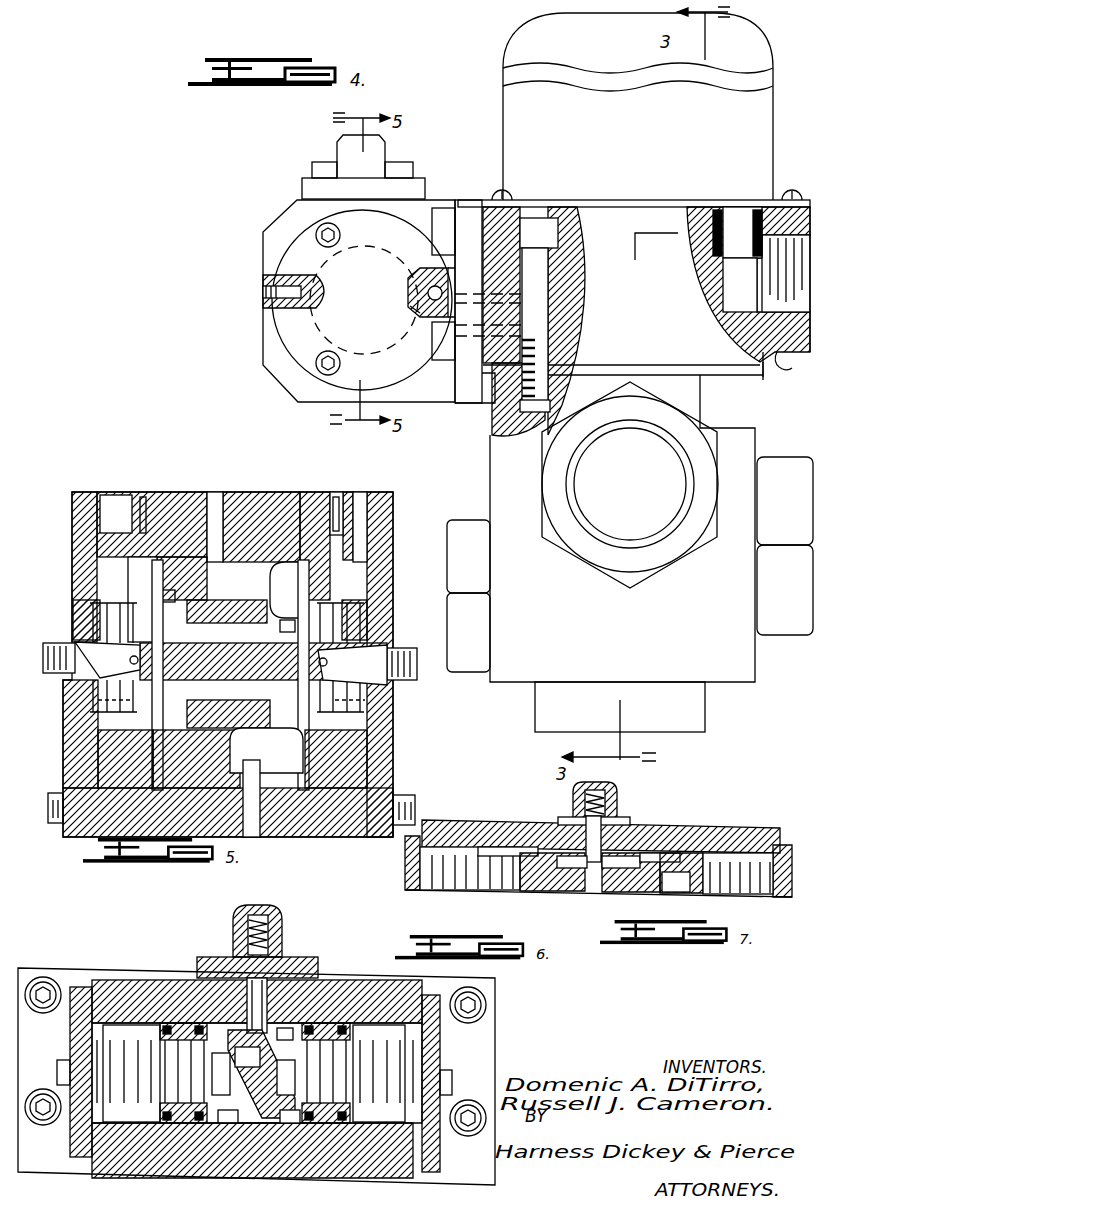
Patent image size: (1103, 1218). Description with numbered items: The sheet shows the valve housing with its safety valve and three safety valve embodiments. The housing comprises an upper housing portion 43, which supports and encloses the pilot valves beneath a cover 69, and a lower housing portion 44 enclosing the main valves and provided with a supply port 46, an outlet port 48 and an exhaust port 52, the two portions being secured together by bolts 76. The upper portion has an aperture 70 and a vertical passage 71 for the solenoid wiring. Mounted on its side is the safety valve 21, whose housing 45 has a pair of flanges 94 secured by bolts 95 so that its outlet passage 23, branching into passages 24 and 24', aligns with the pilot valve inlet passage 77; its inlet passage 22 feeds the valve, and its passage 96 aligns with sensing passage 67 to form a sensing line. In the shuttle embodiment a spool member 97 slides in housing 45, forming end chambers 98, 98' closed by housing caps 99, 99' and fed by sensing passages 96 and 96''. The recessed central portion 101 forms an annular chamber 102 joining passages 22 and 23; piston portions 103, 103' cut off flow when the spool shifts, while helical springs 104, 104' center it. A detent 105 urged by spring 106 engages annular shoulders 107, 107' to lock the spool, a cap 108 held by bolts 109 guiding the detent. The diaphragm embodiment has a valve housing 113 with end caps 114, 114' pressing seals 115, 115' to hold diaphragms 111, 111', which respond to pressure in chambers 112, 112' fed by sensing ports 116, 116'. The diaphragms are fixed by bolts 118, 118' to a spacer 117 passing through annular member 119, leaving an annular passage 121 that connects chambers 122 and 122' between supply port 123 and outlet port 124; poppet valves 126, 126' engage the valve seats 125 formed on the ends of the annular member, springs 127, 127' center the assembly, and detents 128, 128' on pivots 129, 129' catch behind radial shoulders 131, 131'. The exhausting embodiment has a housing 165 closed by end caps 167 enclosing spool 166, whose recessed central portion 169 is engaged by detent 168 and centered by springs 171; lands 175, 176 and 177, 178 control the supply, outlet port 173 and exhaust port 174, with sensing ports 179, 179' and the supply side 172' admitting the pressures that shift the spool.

In FIG. 4, the safety valve 21 is at (255, 349).
In FIG. 6, the safety valve 21 is at (166, 958).
In FIG. 4, the inlet passage 22 is at (266, 292).
In FIG. 6, the inlet passage 22 is at (253, 1074).
In FIG. 4, the outlet passage 23 is at (415, 295).
In FIG. 6, the outlet passage 23 is at (252, 1057).
In FIG. 4, the passage 24 is at (426, 277).
In FIG. 4, the passage 24' is at (391, 318).
In FIG. 4, the upper housing portion 43 is at (662, 295).
In FIG. 4, the lower housing portion 44 is at (668, 640).
In FIG. 4, the safety valve housing 45 is at (300, 206).
In FIG. 6, the safety valve housing 45 is at (158, 975).
In FIG. 4, the supply port 46 is at (470, 520).
In FIG. 4, the outlet port 48 is at (775, 638).
In FIG. 4, the exhaust port 52 is at (665, 548).
In FIG. 4, the sensing passage 67 is at (486, 376).
In FIG. 4, the cover 69 is at (763, 105).
In FIG. 4, the aperture 70 is at (783, 369).
In FIG. 4, the vertical passage 71 is at (758, 206).
In FIG. 4, the bolts 76 is at (545, 323).
In FIG. 4, the inlet passage 77 is at (590, 268).
In FIG. 4, the passage 96 is at (464, 335).
In FIG. 6, the passage 96 is at (351, 1127).
In FIG. 4, the cap 108 is at (386, 152).
In FIG. 6, the cap 108 is at (280, 912).
In FIG. 4, the bolts 109 is at (312, 167).
In FIG. 5, the diaphragm 111 is at (166, 599).
In FIG. 5, the diaphragm 111' is at (273, 579).
In FIG. 5, the chamber 112 is at (168, 498).
In FIG. 5, the chamber 112' is at (317, 498).
In FIG. 5, the valve housing 113 is at (252, 496).
In FIG. 5, the end cap 114 is at (60, 640).
In FIG. 5, the end cap 114' is at (402, 664).
In FIG. 5, the seal 115 is at (114, 568).
In FIG. 5, the seal 115' is at (379, 513).
In FIG. 5, the sensing port 116 is at (134, 491).
In FIG. 5, the sensing port 116' is at (354, 488).
In FIG. 5, the spacer 117 is at (220, 650).
In FIG. 5, the bolt 118 is at (252, 675).
In FIG. 5, the bolt 118' is at (213, 675).
In FIG. 5, the annular member 119 is at (227, 610).
In FIG. 5, the annular passage 121 is at (228, 714).
In FIG. 5, the chamber 122 is at (228, 783).
In FIG. 5, the chamber 122' is at (266, 750).
In FIG. 5, the supply port 123 is at (243, 812).
In FIG. 5, the outlet port 124 is at (215, 492).
In FIG. 5, the valve seat 125 is at (227, 603).
In FIG. 5, the poppet valve 126 is at (159, 758).
In FIG. 5, the poppet valve 126' is at (371, 679).
In FIG. 5, the helical spring 127 is at (79, 653).
In FIG. 5, the helical spring 127' is at (377, 651).
In FIG. 5, the detent 128 is at (79, 646).
In FIG. 5, the detent 128' is at (380, 673).
In FIG. 5, the pivot 129 is at (74, 700).
In FIG. 5, the pivot 129' is at (386, 655).
In FIG. 5, the radial shoulder 131 is at (46, 720).
In FIG. 5, the radial shoulder 131' is at (412, 708).
In FIG. 6, the flanges 94 is at (85, 968).
In FIG. 6, the bolts 95 is at (40, 978).
In FIG. 6, the spool member 97 is at (283, 1025).
In FIG. 6, the chamber 98 is at (393, 1064).
In FIG. 6, the chamber 98' is at (150, 1023).
In FIG. 6, the housing cap 99 is at (455, 1070).
In FIG. 6, the housing cap 99' is at (49, 1061).
In FIG. 6, the central portion 101 is at (265, 1125).
In FIG. 6, the annular chamber 102 is at (237, 1125).
In FIG. 6, the piston portion 103 is at (335, 995).
In FIG. 6, the piston portion 103' is at (193, 987).
In FIG. 6, the helical spring 104 is at (379, 1057).
In FIG. 6, the helical spring 104' is at (140, 1057).
In FIG. 6, the detent 105 is at (272, 985).
In FIG. 6, the helical spring 106 is at (285, 950).
In FIG. 6, the annular shoulder 107 is at (307, 1133).
In FIG. 6, the annular shoulder 107' is at (205, 1138).
In FIG. 6, the passage 96'' is at (162, 1130).
In FIG. 7, the housing 165 is at (472, 820).
In FIG. 7, the spool 166 is at (635, 850).
In FIG. 7, the end caps 167 is at (788, 845).
In FIG. 7, the detent 168 is at (615, 835).
In FIG. 7, the recessed central portion 169 is at (590, 870).
In FIG. 7, the springs 171 is at (448, 820).
In FIG. 7, the block 172' is at (545, 885).
In FIG. 7, the outlet port 173 is at (608, 893).
In FIG. 7, the exhaust port 174 is at (645, 893).
In FIG. 7, the land 175 is at (693, 850).
In FIG. 7, the land 176 is at (740, 825).
In FIG. 7, the land 177 is at (560, 830).
In FIG. 7, the land 178 is at (505, 820).
In FIG. 7, the sensing port 179 is at (739, 889).
In FIG. 7, the sensing port 179' is at (472, 886).